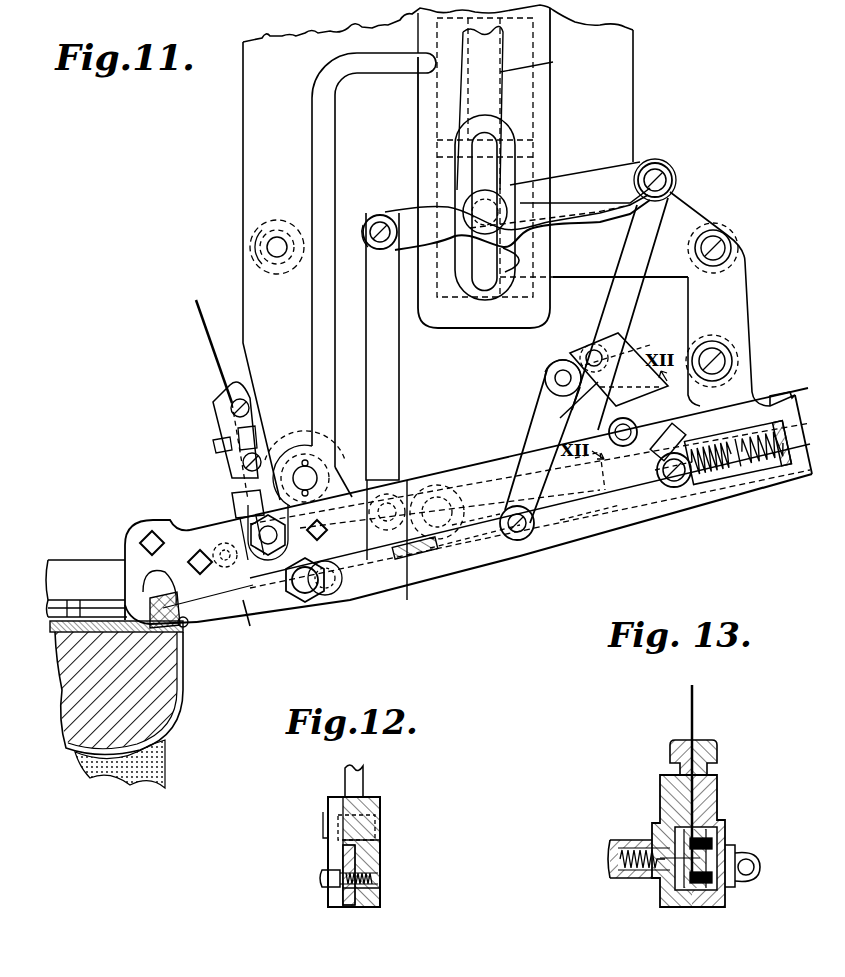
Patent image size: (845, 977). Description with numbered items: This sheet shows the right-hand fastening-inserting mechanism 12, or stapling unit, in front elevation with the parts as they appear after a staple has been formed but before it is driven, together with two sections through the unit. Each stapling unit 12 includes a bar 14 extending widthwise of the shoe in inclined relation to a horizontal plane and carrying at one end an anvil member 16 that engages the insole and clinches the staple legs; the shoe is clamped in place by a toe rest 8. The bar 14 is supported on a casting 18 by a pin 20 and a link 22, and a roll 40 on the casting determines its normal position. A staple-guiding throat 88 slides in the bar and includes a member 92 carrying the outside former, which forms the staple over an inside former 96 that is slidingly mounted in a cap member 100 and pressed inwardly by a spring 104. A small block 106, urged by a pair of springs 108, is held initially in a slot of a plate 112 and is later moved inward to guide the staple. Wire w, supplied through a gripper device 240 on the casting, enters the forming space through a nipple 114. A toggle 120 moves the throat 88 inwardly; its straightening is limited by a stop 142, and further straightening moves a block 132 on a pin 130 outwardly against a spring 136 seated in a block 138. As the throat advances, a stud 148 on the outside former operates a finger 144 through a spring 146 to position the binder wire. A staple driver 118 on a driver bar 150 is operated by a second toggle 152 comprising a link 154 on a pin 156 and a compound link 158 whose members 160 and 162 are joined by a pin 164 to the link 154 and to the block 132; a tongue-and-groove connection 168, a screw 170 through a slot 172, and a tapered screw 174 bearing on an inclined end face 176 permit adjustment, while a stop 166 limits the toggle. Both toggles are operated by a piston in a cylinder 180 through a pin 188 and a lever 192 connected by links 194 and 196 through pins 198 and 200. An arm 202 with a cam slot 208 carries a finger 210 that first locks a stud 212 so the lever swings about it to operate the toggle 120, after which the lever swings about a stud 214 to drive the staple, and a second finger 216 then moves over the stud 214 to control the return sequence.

In FIG. 11, the toe rest 8 is at (152, 757).
In FIG. 11, the fastening-inserting mechanism 12 is at (637, 547).
In FIG. 11, the bar 14 is at (481, 465).
In FIG. 13, the bar 14 is at (667, 795).
In FIG. 11, the anvil member 16 is at (125, 577).
In FIG. 11, the casting 18 is at (243, 140).
In FIG. 11, the pin 20 is at (300, 480).
In FIG. 11, the link 22 is at (733, 290).
In FIG. 11, the roll 40 is at (250, 243).
In FIG. 11, the staple-guiding throat 88 is at (162, 589).
In FIG. 13, the member 92 is at (681, 896).
In FIG. 13, the inside former 96 is at (660, 893).
In FIG. 13, the cap member 100 is at (612, 845).
In FIG. 13, the spring 104 is at (630, 873).
In FIG. 13, the block 106 is at (722, 855).
In FIG. 13, the springs 108 is at (712, 840).
In FIG. 11, the plate 112 is at (366, 592).
In FIG. 11, the nipple 114 is at (235, 505).
In FIG. 13, the nipple 114 is at (718, 752).
In FIG. 11, the staple driver 118 is at (413, 575).
In FIG. 11, the toggle 120 is at (433, 502).
In FIG. 11, the pin 130 is at (684, 494).
In FIG. 11, the block 132 is at (722, 462).
In FIG. 11, the spring 136 is at (757, 470).
In FIG. 11, the block 138 is at (803, 405).
In FIG. 11, the stop 142 is at (476, 560).
In FIG. 11, the finger 144 is at (200, 620).
In FIG. 13, the spring 146 is at (760, 867).
In FIG. 11, the stud 148 is at (308, 602).
In FIG. 11, the driver bar 150 is at (478, 524).
In FIG. 11, the toggle 152 is at (561, 359).
In FIG. 11, the link 154 is at (545, 405).
In FIG. 11, the pin 156 is at (519, 542).
In FIG. 11, the compound link 158 is at (633, 357).
In FIG. 12, the compound link 158 is at (390, 830).
In FIG. 11, the member 160 is at (573, 408).
In FIG. 12, the member 160 is at (341, 858).
In FIG. 11, the member 162 is at (620, 350).
In FIG. 12, the member 162 is at (378, 858).
In FIG. 11, the pin 164 is at (553, 378).
In FIG. 11, the stop 166 is at (576, 545).
In FIG. 12, the tongue-and-groove connection 168 is at (350, 906).
In FIG. 11, the screw 170 is at (645, 402).
In FIG. 12, the screw 170 is at (380, 872).
In FIG. 11, the slot 172 is at (607, 491).
In FIG. 11, the screw 174 is at (680, 428).
In FIG. 11, the inclined end face 176 is at (670, 490).
In FIG. 11, the cylinder 180 is at (543, 107).
In FIG. 11, the pin 188 is at (548, 195).
In FIG. 11, the lever 192 is at (603, 172).
In FIG. 11, the link 194 is at (388, 377).
In FIG. 11, the link 196 is at (640, 250).
In FIG. 12, the link 196 is at (358, 772).
In FIG. 11, the pin 198 is at (387, 492).
In FIG. 11, the pin 200 is at (583, 350).
In FIG. 11, the arm 202 is at (553, 62).
In FIG. 11, the cam slot 208 is at (548, 258).
In FIG. 11, the finger 210 is at (597, 213).
In FIG. 11, the stud 212 is at (667, 175).
In FIG. 11, the stud 214 is at (372, 222).
In FIG. 11, the finger 216 is at (402, 203).
In FIG. 11, the gripper device 240 is at (214, 470).
In FIG. 11, the wire w is at (200, 333).
In FIG. 13, the wire w is at (697, 707).